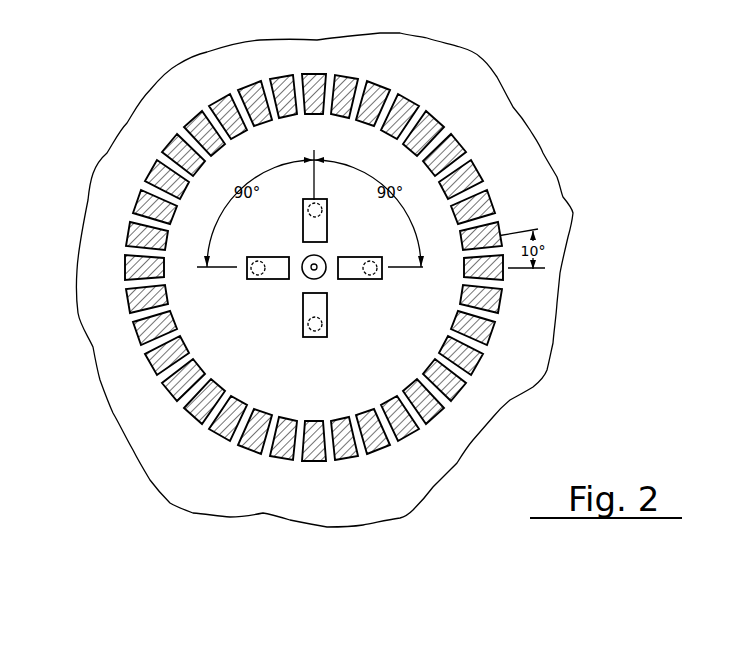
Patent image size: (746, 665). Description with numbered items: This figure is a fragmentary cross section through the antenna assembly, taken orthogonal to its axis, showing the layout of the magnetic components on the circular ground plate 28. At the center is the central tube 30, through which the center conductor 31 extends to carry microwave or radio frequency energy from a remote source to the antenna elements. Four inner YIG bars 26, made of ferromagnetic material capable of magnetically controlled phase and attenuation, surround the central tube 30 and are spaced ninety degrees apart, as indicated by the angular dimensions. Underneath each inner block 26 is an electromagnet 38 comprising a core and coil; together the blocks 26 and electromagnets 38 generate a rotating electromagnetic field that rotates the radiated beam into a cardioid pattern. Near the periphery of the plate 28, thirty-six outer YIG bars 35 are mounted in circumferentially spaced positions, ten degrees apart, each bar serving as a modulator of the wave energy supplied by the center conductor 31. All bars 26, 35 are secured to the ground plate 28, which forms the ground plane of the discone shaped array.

The inner YIG bar 26 is at (374, 281).
The circular ground plate 28 is at (93, 257).
The central tube 30 is at (318, 279).
The center conductor 31 is at (302, 273).
The outer YIG bar 35 is at (137, 200).
The electromagnet 38 is at (383, 268).